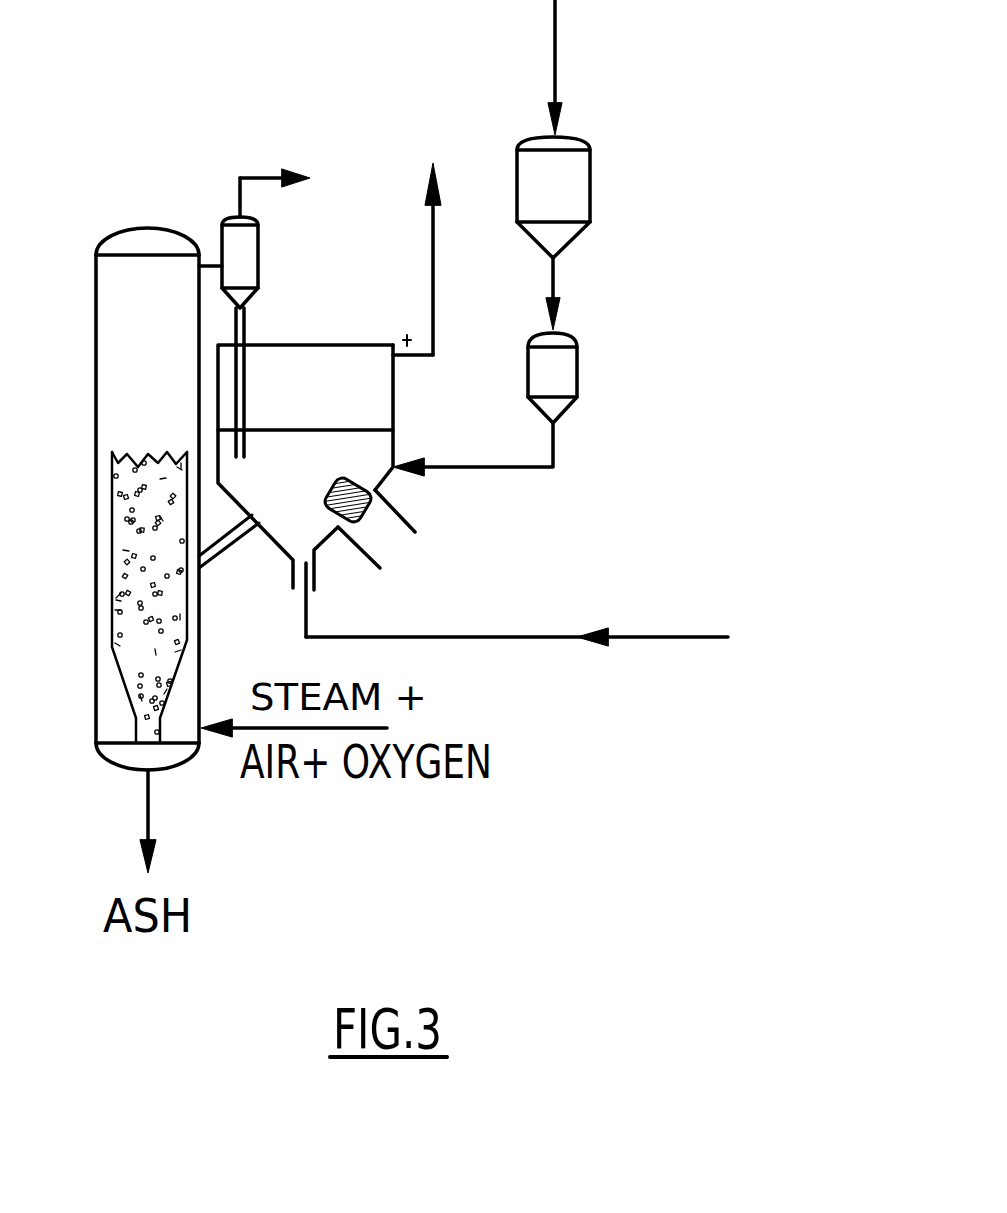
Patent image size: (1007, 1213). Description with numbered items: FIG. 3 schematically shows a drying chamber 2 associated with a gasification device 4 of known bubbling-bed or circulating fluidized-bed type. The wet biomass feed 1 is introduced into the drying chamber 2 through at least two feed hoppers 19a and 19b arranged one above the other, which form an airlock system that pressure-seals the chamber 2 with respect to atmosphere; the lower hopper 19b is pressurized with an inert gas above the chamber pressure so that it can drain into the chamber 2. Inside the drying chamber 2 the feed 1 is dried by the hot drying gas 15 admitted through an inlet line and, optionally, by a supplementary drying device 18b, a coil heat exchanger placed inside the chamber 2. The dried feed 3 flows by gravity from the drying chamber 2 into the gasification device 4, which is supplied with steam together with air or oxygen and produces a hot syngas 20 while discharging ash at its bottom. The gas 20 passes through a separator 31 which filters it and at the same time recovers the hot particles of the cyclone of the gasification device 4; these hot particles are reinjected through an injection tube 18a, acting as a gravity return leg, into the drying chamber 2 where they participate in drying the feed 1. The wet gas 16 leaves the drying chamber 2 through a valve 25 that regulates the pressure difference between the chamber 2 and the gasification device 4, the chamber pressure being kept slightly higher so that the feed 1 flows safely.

The feed 1 is at (557, 50).
The drying chamber 2 is at (397, 428).
The dried feed 3 is at (237, 541).
The gasification device 4 is at (127, 373).
The hot drying gas 15 is at (530, 640).
The wet gas 16 is at (431, 285).
The injection tube 18a is at (244, 378).
The supplementary drying device 18b is at (372, 548).
The feed hopper 19a is at (553, 188).
The feed hopper 19b is at (555, 374).
The gas 20 is at (257, 177).
The valve 25 is at (415, 342).
The separator 31 is at (248, 250).